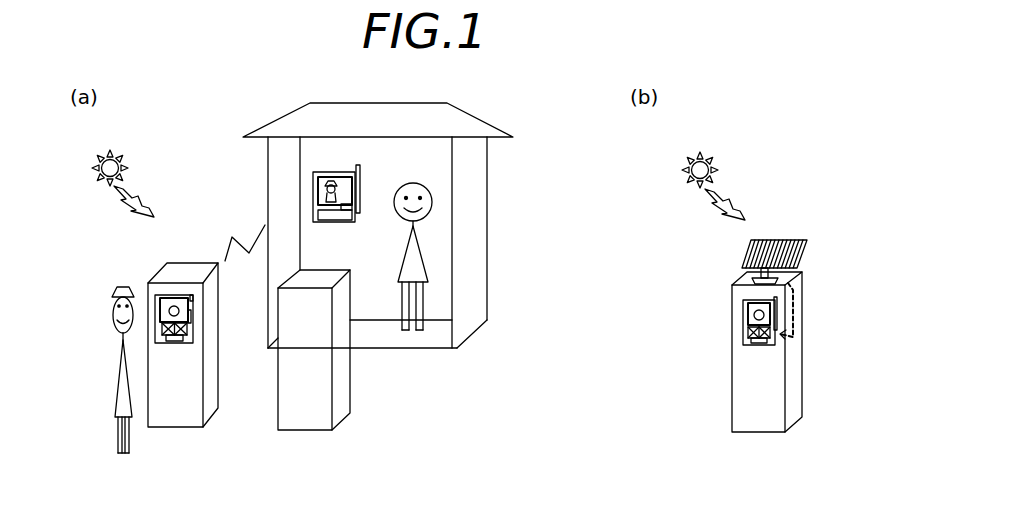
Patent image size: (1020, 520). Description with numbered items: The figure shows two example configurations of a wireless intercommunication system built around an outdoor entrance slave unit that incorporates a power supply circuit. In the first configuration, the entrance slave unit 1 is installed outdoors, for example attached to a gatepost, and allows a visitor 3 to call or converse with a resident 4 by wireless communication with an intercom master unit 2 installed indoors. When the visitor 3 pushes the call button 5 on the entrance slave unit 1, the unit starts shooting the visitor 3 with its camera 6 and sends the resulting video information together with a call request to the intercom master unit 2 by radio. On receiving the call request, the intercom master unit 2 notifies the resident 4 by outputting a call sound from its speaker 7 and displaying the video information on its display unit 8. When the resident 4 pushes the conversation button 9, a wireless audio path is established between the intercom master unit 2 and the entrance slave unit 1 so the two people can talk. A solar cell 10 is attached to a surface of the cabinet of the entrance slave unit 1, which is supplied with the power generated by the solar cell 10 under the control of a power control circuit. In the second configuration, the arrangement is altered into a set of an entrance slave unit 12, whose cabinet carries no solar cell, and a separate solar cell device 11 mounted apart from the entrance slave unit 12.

The entrance slave unit 1 is at (188, 338).
The intercom master unit 2 is at (360, 181).
The visitor 3 is at (122, 380).
The resident 4 is at (412, 250).
The call button 5 is at (185, 336).
The camera 6 is at (166, 298).
The speaker 7 is at (358, 212).
The display unit 8 is at (322, 177).
The conversation button 9 is at (331, 221).
The solar cell 10 is at (180, 296).
The solar cell device 11 is at (797, 242).
The entrance slave unit 12 is at (743, 328).